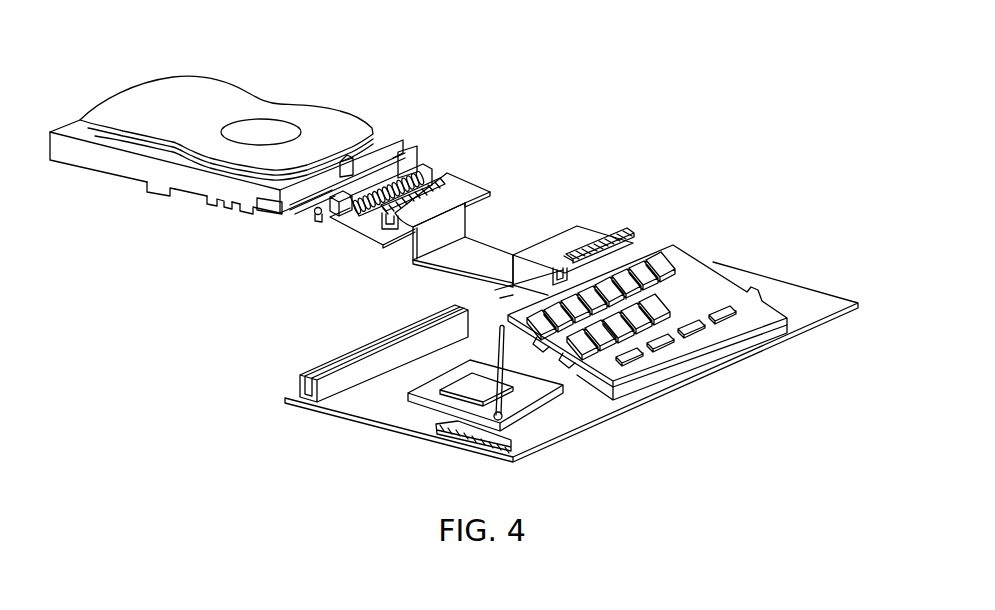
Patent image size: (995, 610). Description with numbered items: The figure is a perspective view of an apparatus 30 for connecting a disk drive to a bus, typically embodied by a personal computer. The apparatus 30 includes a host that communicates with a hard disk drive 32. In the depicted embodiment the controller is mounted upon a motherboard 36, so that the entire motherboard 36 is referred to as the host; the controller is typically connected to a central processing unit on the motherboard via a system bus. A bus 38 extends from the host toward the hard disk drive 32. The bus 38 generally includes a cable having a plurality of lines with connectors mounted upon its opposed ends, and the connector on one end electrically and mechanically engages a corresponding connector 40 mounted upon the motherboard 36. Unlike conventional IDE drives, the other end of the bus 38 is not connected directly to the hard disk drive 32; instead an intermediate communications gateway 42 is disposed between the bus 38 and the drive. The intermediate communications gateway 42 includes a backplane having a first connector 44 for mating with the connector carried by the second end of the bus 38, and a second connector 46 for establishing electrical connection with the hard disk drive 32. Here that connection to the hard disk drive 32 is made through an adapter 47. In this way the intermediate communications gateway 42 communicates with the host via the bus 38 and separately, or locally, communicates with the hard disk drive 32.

The apparatus 30 is at (547, 134).
The hard disk drive 32 is at (238, 98).
The motherboard 36 is at (792, 299).
The bus 38 is at (476, 259).
The connector 40 is at (615, 236).
The intermediate communications gateway 42 is at (360, 223).
The first connector 44 is at (395, 224).
The second connector 46 is at (436, 171).
The adapter 47 is at (302, 216).